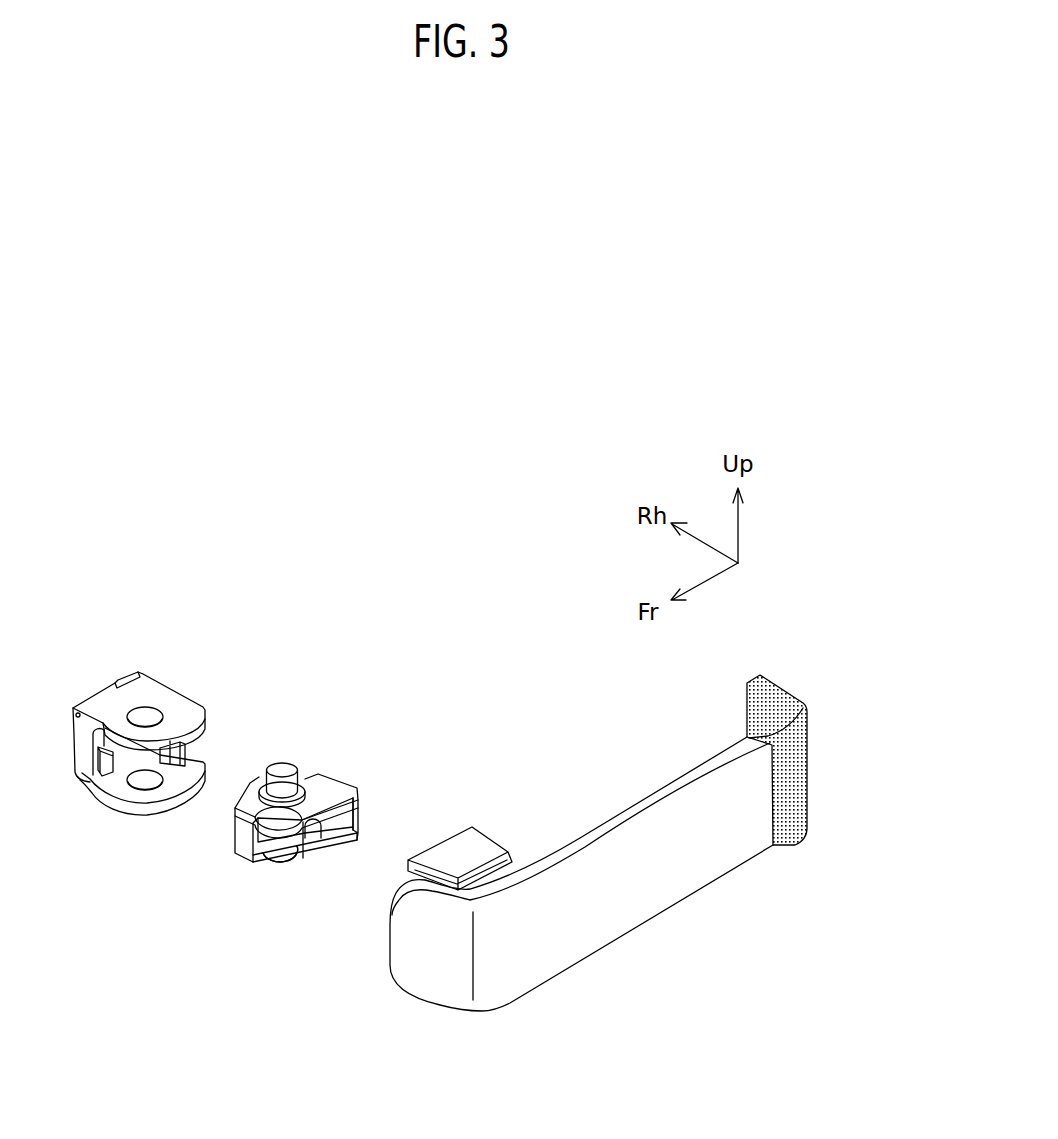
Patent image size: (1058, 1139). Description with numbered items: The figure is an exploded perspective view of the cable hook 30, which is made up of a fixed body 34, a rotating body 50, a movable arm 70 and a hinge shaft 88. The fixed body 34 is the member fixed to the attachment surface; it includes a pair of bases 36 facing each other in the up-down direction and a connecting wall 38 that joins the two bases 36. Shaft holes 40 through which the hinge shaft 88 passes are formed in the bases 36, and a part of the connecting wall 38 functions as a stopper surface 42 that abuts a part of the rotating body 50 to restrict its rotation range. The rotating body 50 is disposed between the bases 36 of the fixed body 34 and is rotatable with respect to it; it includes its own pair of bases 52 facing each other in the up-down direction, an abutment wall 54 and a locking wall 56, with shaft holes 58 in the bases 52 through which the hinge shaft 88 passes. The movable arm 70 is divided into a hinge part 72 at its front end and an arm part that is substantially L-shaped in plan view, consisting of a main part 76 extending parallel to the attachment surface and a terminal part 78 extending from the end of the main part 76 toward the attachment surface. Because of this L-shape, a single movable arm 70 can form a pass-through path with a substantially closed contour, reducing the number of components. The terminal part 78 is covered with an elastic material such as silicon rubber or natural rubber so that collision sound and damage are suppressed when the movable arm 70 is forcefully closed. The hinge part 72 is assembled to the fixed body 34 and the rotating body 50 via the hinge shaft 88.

The cable hook 30 is at (421, 652).
The fixed body 34 is at (101, 650).
The bases 36 is at (166, 686).
The connecting wall 38 is at (75, 747).
The shaft holes 40 is at (145, 716).
The stopper surface 42 is at (105, 766).
The rotating body 50 is at (281, 897).
The bases 52 is at (322, 790).
The abutment wall 54 is at (236, 843).
The locking wall 56 is at (355, 818).
The shaft holes 58 is at (258, 787).
The hinge shaft 88 is at (286, 767).
The movable arm 70 is at (568, 1008).
The hinge part 72 is at (473, 840).
The main part 76 is at (643, 888).
The terminal part 78 is at (808, 793).